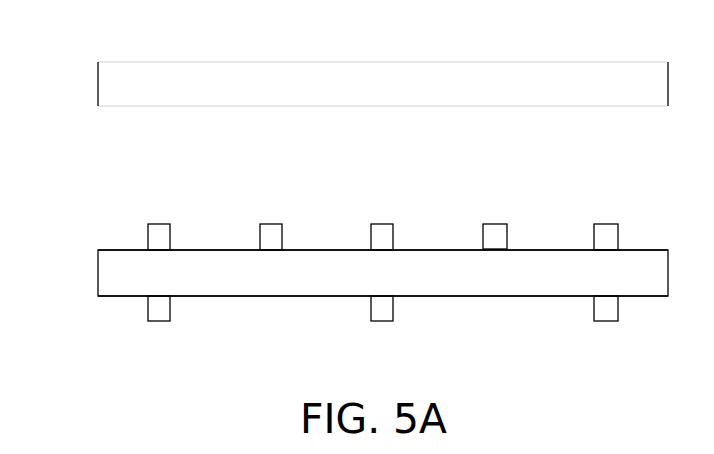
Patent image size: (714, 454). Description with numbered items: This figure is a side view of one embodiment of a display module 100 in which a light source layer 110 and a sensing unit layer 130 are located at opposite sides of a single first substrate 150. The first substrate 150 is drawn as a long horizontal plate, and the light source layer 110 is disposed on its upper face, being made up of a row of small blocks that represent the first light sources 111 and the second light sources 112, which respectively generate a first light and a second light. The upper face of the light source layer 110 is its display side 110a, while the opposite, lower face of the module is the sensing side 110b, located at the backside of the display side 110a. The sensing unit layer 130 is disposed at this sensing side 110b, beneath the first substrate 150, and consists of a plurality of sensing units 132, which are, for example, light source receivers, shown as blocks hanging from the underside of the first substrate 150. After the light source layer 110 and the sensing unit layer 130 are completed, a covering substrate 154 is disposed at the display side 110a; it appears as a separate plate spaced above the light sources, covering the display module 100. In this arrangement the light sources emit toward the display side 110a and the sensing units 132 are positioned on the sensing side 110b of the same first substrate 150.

The display module 100 is at (62, 36).
The covering substrate 154 is at (108, 84).
The first substrate 150 is at (107, 274).
The display side 110a is at (106, 141).
The sensing side 110b is at (107, 393).
The light source layer 110 is at (352, 212).
The first light source 111 is at (161, 239).
The second light source 112 is at (275, 238).
The sensing unit layer 130 is at (329, 337).
The sensing unit 132 is at (163, 308).